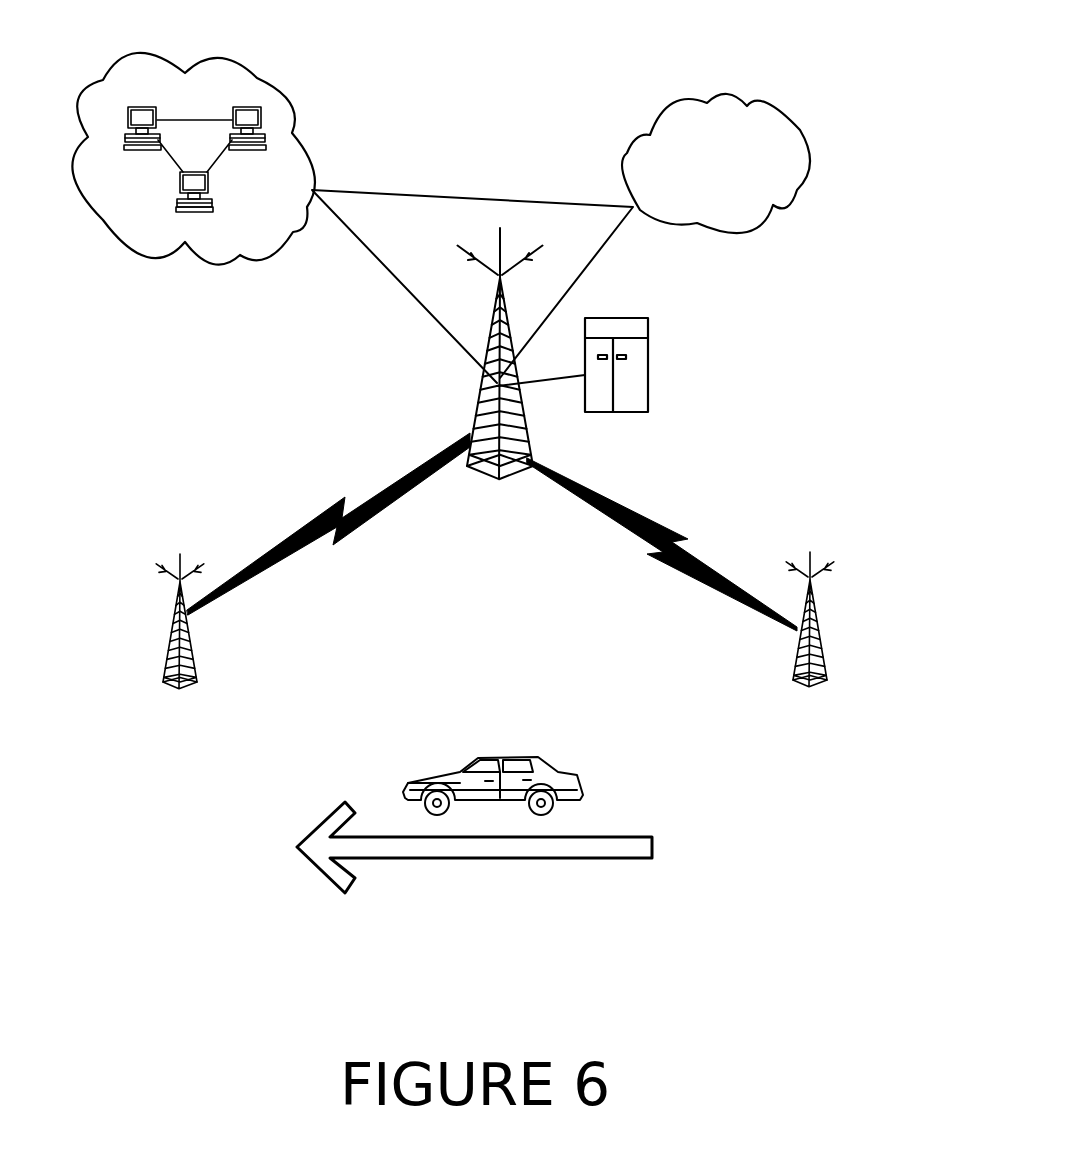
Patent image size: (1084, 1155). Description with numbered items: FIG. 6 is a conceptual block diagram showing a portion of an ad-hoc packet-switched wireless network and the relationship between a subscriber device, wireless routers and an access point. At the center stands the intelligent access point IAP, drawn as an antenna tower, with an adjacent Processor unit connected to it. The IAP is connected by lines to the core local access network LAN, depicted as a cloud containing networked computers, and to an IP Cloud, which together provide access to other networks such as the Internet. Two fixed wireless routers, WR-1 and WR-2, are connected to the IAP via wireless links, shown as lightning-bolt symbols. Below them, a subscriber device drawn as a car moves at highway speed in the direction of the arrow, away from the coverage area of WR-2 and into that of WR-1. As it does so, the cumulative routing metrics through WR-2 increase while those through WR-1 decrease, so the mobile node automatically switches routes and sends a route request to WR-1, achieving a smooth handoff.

The core local access network LAN is at (193, 136).
The IP cloud IP Cloud is at (716, 163).
The processor Processor is at (702, 365).
The intelligent access point IAP is at (500, 382).
The wireless router WR-1 is at (225, 626).
The wireless router WR-2 is at (857, 625).